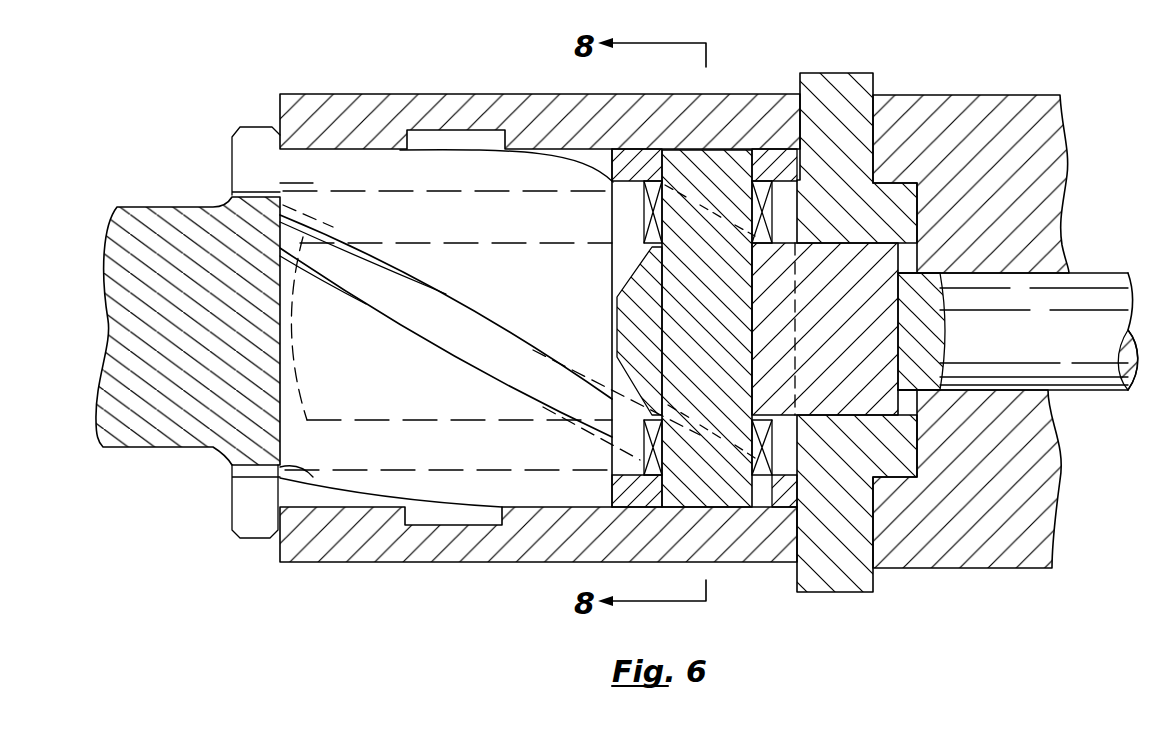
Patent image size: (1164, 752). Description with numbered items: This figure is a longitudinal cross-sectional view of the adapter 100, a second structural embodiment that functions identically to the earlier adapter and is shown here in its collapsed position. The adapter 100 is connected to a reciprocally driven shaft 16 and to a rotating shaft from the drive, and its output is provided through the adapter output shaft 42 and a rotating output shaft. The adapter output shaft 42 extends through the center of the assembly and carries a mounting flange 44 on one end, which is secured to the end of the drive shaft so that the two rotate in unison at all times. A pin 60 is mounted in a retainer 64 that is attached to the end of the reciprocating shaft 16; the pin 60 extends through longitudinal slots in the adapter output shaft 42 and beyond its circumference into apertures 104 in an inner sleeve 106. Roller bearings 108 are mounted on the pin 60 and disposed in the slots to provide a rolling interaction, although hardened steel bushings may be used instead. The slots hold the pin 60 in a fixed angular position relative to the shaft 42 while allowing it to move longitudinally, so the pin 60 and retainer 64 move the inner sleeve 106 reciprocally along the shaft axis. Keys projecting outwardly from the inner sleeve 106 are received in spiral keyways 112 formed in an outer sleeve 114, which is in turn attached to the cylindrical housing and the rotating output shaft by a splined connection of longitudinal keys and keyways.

The reciprocating shaft 16 is at (1026, 358).
The adapter output shaft 42 is at (146, 207).
The mounting flange 44 is at (868, 92).
The pin 60 is at (714, 361).
The retainer 64 is at (834, 358).
The adapter 100 is at (540, 294).
The apertures 104 is at (752, 178).
The inner sleeve 106 is at (773, 163).
The roller bearings 108 is at (775, 215).
The spiral keyways 112 is at (303, 237).
The outer sleeve 114 is at (345, 113).